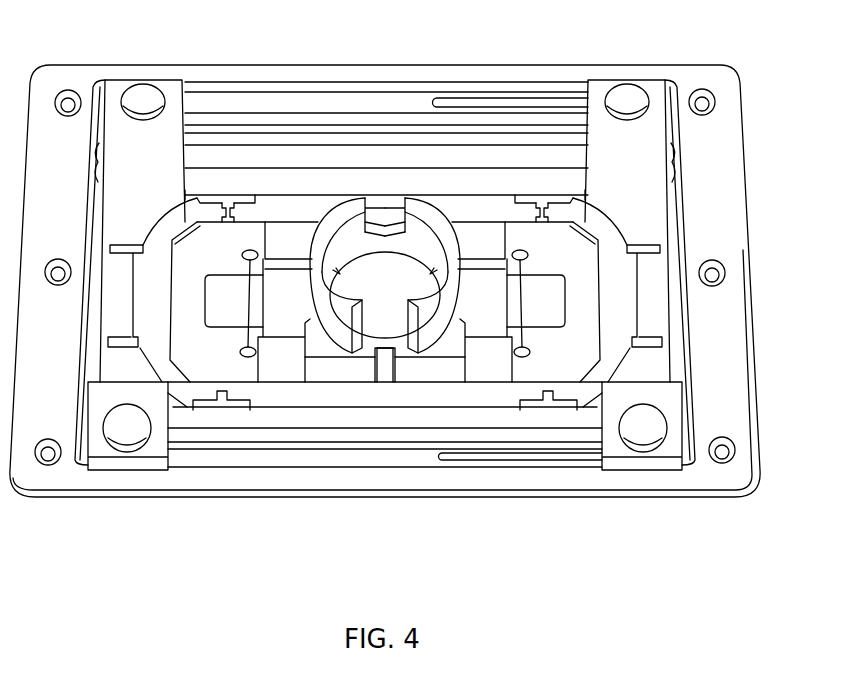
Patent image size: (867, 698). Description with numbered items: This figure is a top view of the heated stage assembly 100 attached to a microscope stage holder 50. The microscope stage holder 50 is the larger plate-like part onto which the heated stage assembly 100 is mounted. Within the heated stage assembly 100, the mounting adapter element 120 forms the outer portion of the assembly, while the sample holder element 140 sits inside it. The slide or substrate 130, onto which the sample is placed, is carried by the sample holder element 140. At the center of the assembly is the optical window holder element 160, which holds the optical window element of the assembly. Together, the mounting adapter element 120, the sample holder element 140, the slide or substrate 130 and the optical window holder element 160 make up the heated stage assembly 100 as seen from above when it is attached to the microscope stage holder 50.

The microscope stage holder 50 is at (158, 138).
The heated stage assembly 100 is at (247, 213).
The mounting adapter element 120 is at (627, 311).
The slide or substrate 130 is at (292, 303).
The sample holder element 140 is at (594, 240).
The optical window holder element 160 is at (452, 232).